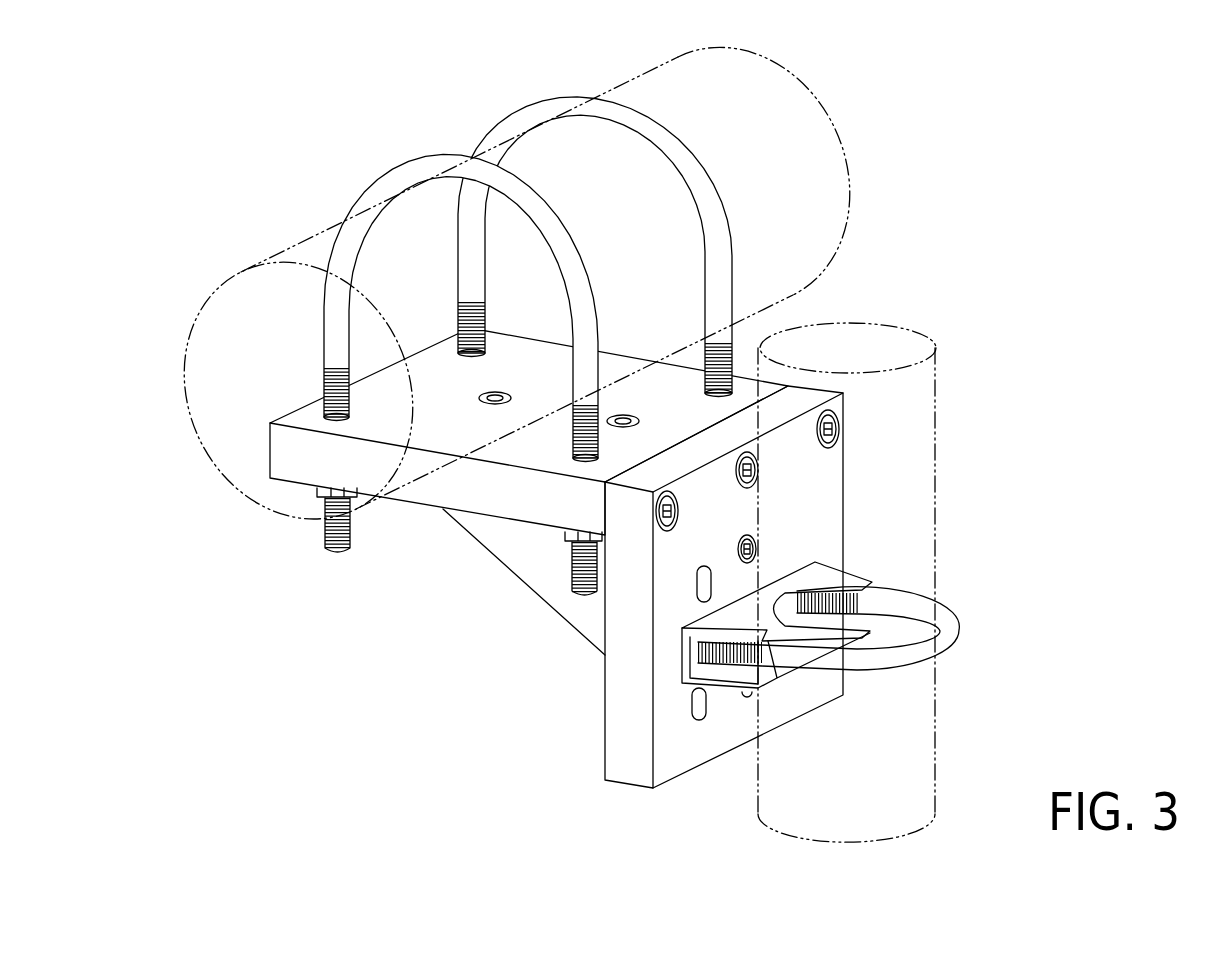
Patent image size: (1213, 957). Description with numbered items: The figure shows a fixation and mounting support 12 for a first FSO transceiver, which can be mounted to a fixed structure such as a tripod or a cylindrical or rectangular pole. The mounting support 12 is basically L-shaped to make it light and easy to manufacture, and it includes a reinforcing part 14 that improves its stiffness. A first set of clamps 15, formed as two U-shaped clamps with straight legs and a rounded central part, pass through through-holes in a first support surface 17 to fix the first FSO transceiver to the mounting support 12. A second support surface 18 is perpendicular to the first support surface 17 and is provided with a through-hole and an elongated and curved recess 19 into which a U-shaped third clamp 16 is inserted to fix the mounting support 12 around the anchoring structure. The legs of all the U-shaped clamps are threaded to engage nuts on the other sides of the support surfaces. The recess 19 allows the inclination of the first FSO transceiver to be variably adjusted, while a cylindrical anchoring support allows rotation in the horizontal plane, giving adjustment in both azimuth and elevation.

The mounting support 12 is at (400, 668).
The reinforcing part 14 is at (513, 545).
The first set of clamps 15 is at (507, 128).
The third clamp 16 is at (950, 633).
The first support surface 17 is at (388, 423).
The second support surface 18 is at (674, 738).
The elongated and curved recess 19 is at (700, 601).